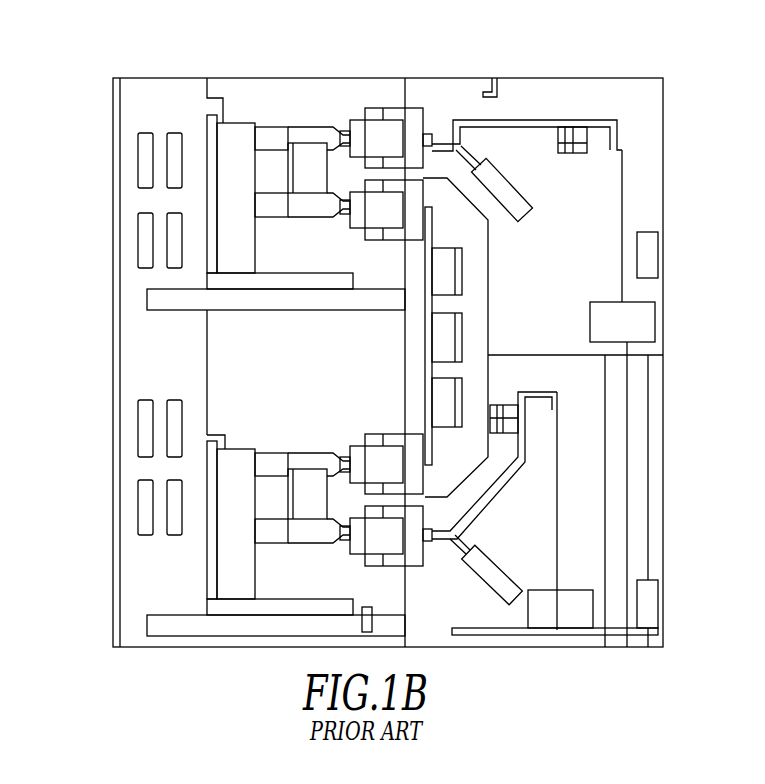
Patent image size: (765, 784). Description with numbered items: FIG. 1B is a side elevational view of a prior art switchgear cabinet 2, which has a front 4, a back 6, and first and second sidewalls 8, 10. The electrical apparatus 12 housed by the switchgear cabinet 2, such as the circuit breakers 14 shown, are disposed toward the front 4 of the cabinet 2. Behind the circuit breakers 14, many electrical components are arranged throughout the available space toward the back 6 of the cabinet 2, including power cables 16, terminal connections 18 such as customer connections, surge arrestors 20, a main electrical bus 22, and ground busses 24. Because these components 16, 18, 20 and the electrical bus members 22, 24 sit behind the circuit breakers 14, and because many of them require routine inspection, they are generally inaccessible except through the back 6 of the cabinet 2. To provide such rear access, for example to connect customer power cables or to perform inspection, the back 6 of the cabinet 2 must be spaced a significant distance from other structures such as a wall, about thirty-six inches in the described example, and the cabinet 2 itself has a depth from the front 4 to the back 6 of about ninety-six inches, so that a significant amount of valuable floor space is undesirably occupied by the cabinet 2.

The switchgear cabinet 2 is at (140, 692).
The front 4 is at (111, 298).
The back 6 is at (667, 483).
The first sidewall 8 is at (516, 92).
The second sidewall 10 is at (692, 298).
The electrical apparatus 12 is at (231, 88).
The circuit breaker 14 is at (228, 187).
The power cable 16 is at (622, 238).
The terminal connection 18 is at (598, 178).
The surge arrestor 20 is at (522, 197).
The main electrical bus 22 is at (492, 268).
The ground bus 24 is at (490, 633).